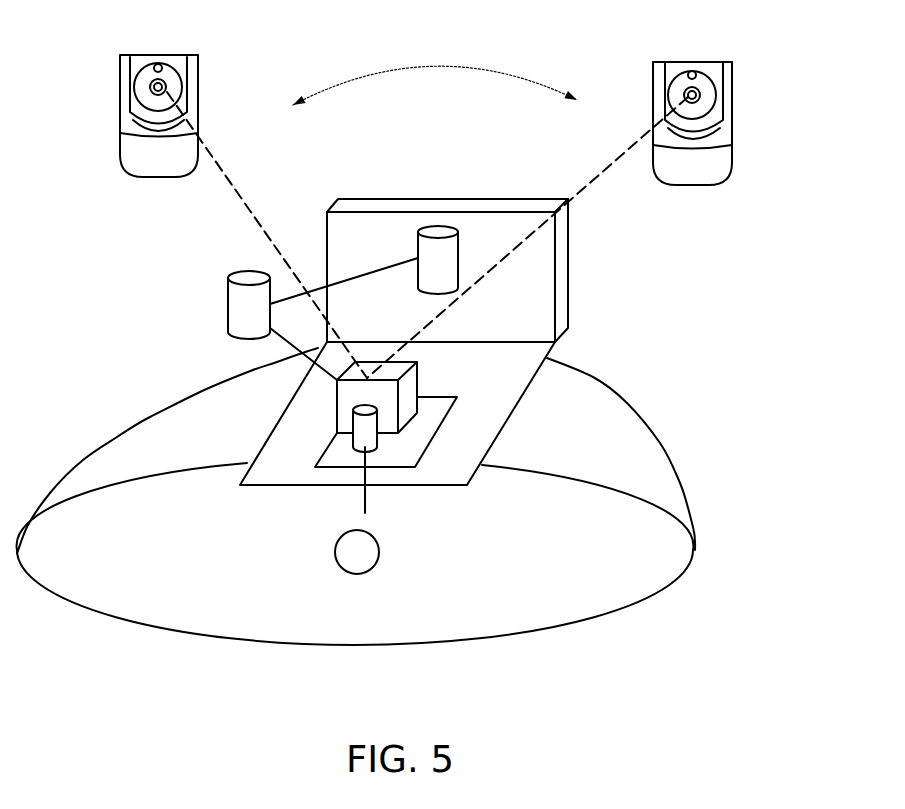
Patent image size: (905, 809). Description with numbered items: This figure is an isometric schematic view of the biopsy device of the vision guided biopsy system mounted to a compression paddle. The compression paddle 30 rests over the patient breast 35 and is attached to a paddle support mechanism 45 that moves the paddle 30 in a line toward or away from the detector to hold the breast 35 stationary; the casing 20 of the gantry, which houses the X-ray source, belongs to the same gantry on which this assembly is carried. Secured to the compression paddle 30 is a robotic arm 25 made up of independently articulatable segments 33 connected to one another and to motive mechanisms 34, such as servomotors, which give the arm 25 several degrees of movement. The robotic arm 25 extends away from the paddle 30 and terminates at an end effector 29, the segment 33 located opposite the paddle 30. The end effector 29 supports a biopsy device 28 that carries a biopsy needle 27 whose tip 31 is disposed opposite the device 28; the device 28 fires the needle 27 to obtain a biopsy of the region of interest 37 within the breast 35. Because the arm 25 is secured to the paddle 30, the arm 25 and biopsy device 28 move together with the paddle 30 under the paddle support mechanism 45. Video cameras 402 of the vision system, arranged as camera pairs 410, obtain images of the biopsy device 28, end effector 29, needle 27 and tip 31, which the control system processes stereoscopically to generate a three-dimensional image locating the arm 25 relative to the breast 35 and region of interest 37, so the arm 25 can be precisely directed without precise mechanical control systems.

The casing 20 is at (645, 267).
The robotic arm 25 is at (225, 262).
The biopsy needle 27 is at (317, 480).
The biopsy device 28 is at (352, 425).
The end effector 29 is at (410, 418).
The compression paddle 30 is at (583, 377).
The needle tip 31 is at (365, 497).
The segments 33 is at (347, 265).
The motive mechanisms 34 is at (440, 227).
The patient breast 35 is at (88, 483).
The region of interest 37 is at (357, 575).
The paddle support mechanism 45 is at (499, 226).
The video cameras 402 is at (120, 80).
The camera pairs 410 is at (435, 80).